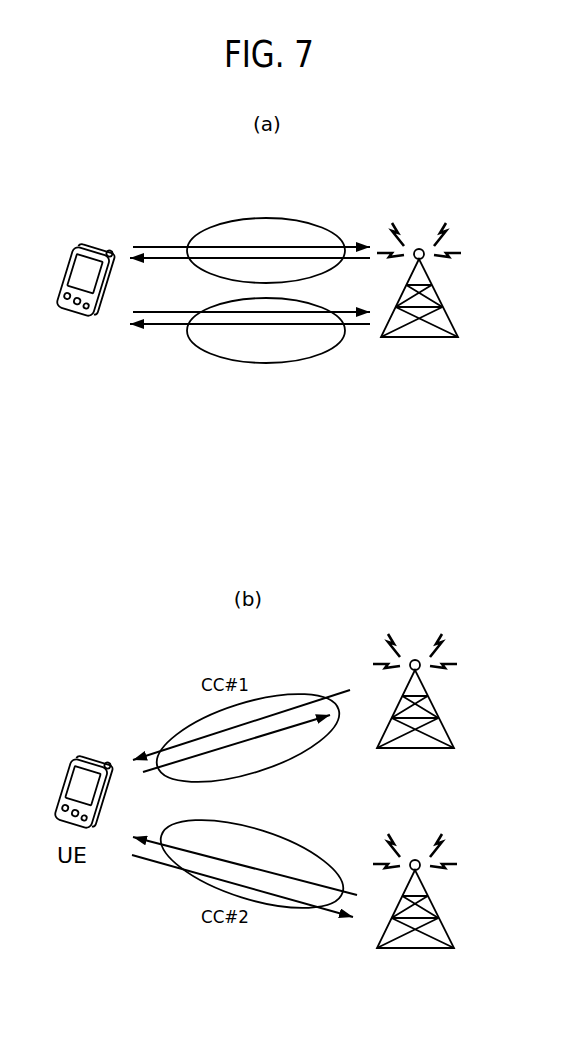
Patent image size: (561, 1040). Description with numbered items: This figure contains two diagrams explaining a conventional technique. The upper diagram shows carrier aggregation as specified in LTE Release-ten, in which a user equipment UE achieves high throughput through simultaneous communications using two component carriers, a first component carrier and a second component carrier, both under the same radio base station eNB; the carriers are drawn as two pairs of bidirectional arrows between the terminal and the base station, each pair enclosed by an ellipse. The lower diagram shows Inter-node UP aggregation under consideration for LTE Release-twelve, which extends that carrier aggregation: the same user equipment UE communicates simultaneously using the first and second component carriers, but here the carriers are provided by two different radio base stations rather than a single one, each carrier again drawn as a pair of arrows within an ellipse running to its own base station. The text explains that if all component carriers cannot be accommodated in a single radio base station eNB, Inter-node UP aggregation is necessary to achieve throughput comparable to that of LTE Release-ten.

The user equipment UE is at (86, 297).
The radio base station eNB is at (419, 301).